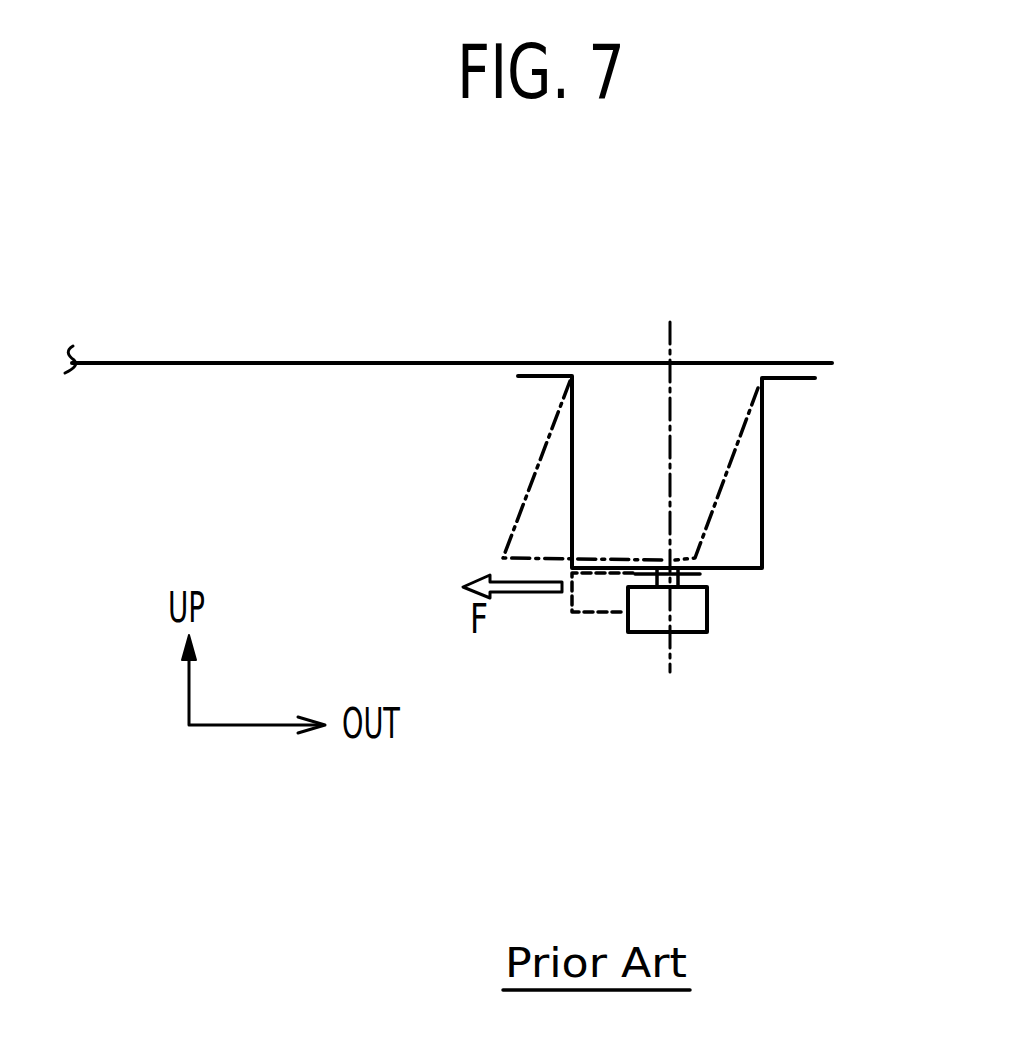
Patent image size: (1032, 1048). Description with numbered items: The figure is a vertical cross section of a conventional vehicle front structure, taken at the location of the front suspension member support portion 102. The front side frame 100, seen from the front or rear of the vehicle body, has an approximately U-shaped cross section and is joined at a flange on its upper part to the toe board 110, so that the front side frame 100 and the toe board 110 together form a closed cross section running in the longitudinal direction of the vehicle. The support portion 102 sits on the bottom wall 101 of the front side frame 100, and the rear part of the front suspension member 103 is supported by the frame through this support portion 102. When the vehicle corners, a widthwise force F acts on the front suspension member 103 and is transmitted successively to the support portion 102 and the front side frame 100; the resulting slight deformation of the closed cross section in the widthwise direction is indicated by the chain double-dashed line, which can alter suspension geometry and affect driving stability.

The toe board 110 is at (177, 366).
The front side frame 100 is at (762, 448).
The bottom wall 101 is at (736, 574).
The front suspension member support portion 102 is at (683, 578).
The front suspension member 103 is at (687, 627).